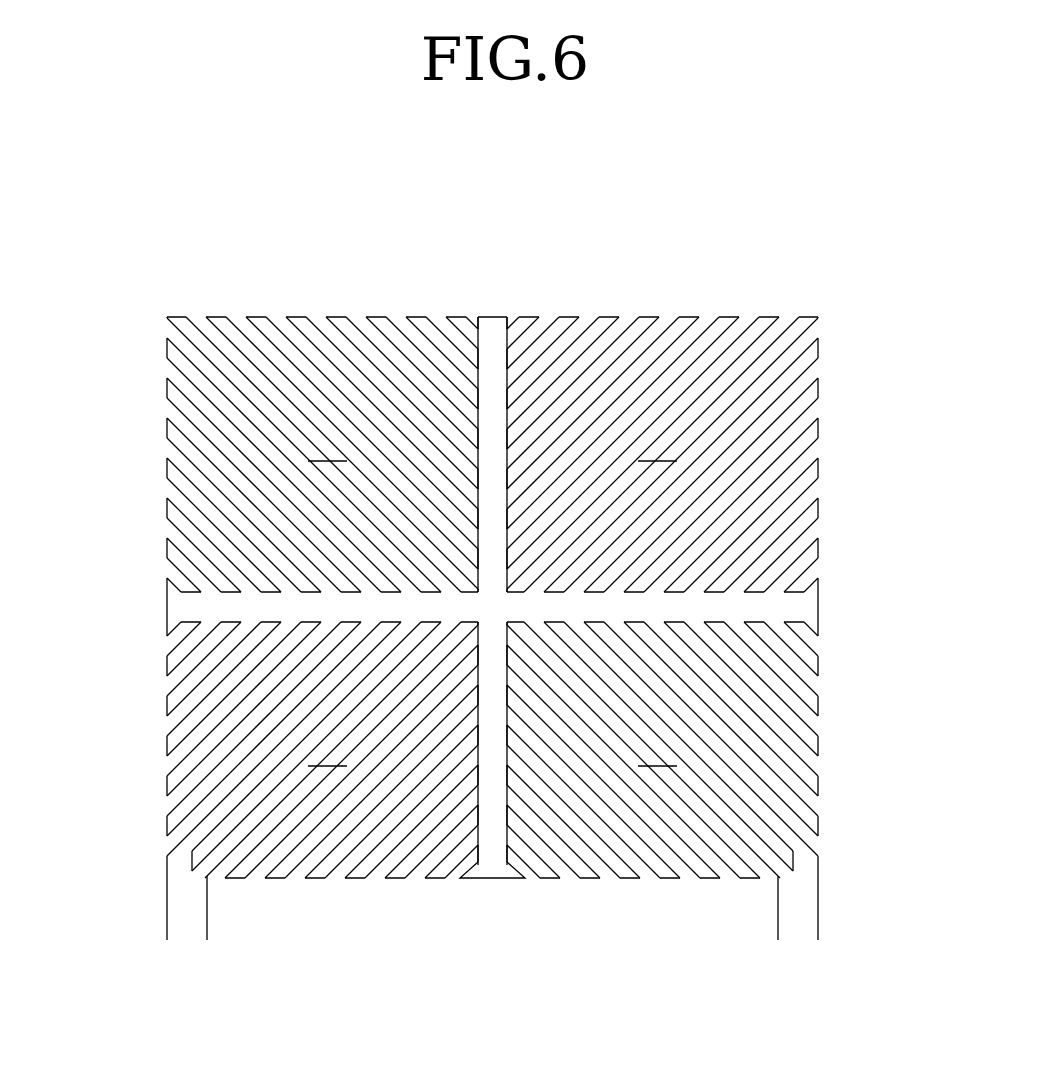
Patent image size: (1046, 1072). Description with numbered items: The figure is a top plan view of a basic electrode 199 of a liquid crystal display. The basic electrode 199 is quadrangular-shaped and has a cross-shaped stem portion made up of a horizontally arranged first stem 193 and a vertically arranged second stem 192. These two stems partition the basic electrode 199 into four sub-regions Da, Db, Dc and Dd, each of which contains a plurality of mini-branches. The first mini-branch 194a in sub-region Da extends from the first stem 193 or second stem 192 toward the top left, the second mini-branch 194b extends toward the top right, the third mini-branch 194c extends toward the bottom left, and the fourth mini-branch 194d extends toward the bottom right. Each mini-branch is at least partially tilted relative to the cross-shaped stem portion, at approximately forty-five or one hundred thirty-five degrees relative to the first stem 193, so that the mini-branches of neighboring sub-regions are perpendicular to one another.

The basic electrode 199 is at (842, 255).
The second stem 192 is at (510, 440).
The first stem 193 is at (712, 625).
The first mini-branch 194a is at (321, 372).
The second mini-branch 194b is at (708, 368).
The third mini-branch 194c is at (206, 767).
The fourth mini-branch 194d is at (718, 826).